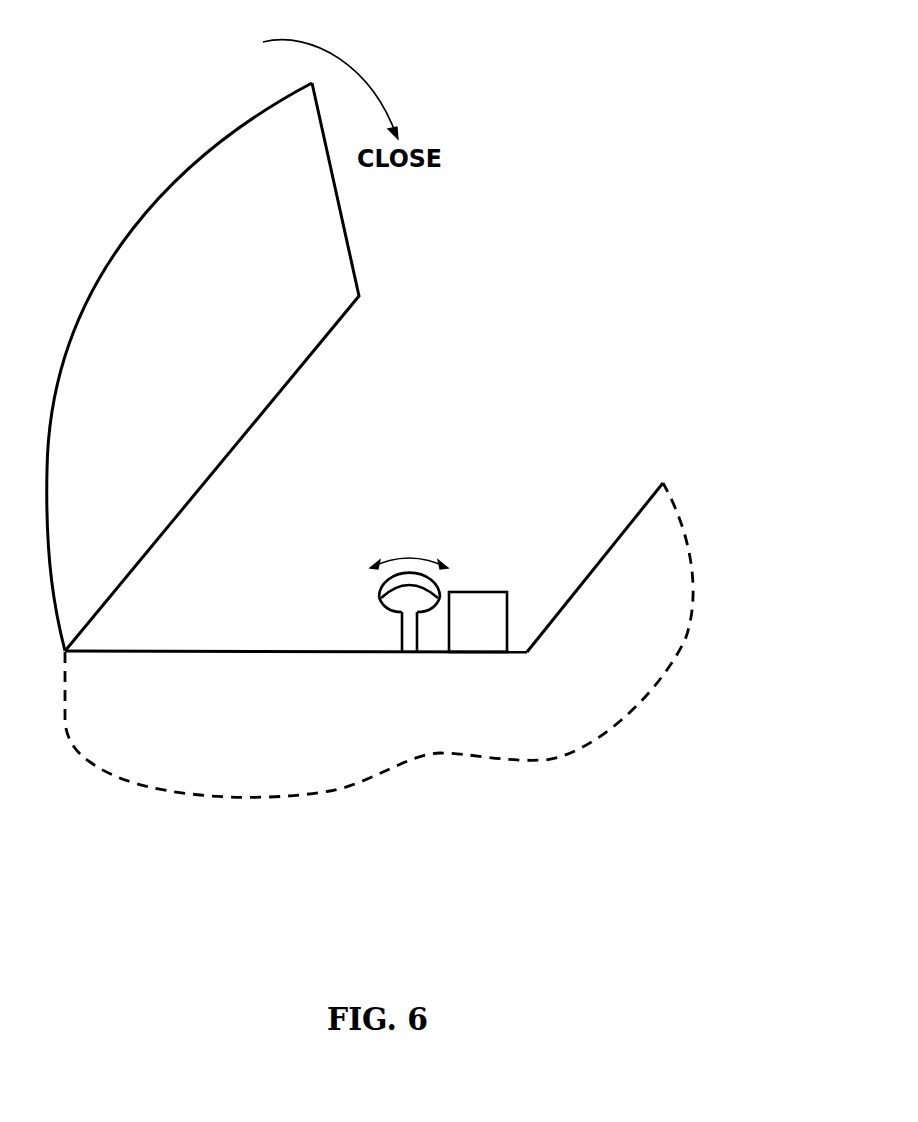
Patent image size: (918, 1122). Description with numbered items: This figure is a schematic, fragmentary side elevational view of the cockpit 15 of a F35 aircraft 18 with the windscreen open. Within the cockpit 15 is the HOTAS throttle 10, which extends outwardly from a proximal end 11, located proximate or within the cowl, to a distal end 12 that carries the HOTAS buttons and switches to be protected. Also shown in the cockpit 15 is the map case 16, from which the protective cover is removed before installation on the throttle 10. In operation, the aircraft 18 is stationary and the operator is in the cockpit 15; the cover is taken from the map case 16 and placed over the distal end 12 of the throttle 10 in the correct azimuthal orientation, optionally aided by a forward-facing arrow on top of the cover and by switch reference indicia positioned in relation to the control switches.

The HOTAS throttle 10 is at (456, 687).
The proximal end 11 is at (400, 652).
The distal end 12 is at (400, 600).
The cockpit 15 is at (187, 588).
The map case 16 is at (492, 633).
The F35 aircraft 18 is at (613, 643).